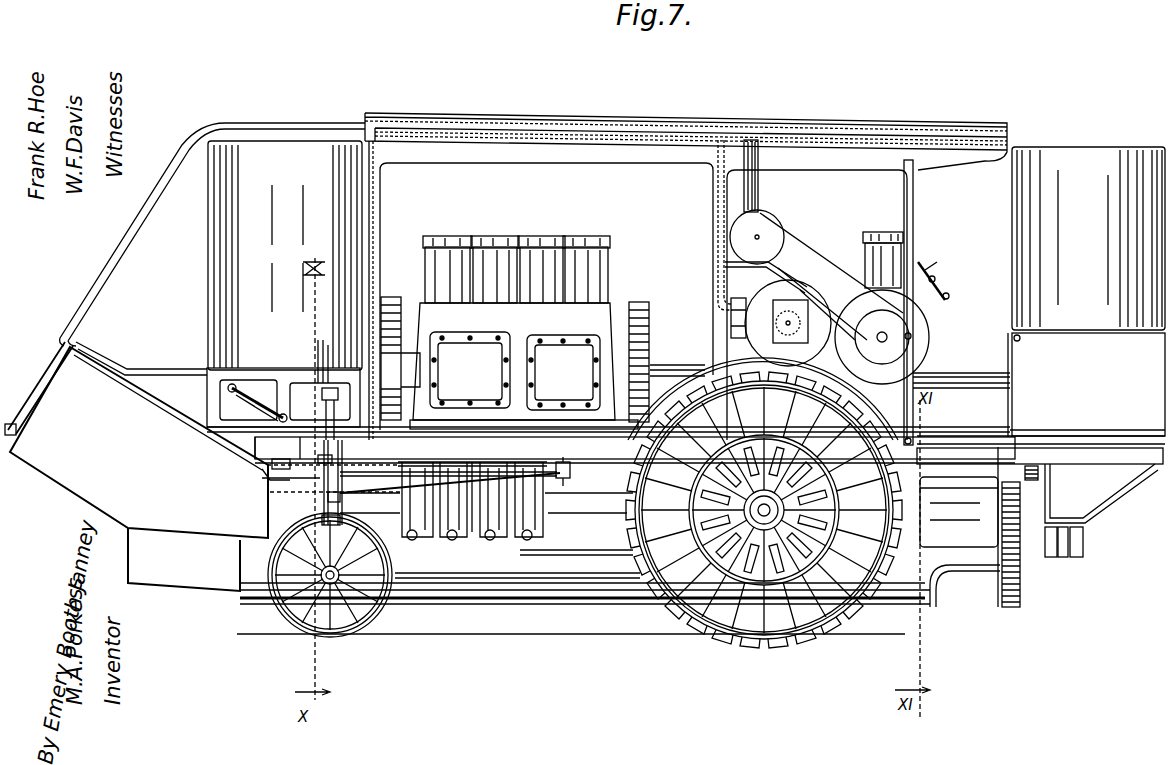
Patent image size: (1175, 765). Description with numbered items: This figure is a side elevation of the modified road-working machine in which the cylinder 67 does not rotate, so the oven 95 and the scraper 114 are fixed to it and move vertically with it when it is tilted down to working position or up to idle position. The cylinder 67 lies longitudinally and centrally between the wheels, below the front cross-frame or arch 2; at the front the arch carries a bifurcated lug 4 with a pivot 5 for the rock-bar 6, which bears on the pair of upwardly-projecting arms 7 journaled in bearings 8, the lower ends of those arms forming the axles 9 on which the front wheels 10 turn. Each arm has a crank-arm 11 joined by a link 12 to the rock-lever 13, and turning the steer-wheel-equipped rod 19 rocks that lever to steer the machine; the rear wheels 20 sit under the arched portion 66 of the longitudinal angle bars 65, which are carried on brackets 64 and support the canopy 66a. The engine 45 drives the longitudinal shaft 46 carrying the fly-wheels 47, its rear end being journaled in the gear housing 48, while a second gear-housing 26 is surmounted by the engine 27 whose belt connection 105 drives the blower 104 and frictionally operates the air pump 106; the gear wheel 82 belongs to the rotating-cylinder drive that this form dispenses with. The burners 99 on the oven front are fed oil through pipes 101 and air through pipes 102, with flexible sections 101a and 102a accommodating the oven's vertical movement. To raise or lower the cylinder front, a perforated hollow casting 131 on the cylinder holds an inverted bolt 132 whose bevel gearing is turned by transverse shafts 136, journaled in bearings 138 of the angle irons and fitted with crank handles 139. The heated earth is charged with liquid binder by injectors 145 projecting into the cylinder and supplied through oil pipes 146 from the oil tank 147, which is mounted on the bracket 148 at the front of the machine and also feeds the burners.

The canopy 66a is at (686, 132).
The flexible section 102a is at (126, 232).
The pipe 102 is at (64, 334).
The pipe 101 is at (50, 361).
The burner 99 is at (15, 433).
The flexible section 101a is at (157, 369).
The oven 95 is at (98, 494).
The scraper 114 is at (192, 597).
The oil tank 147 is at (285, 255).
The bracket 148 is at (210, 385).
The crank handle 139 is at (232, 392).
The transverse shaft 136 is at (275, 414).
The pivot 5 is at (320, 401).
The upwardly-projecting arm 7 is at (322, 412).
The rock-bar 6 is at (320, 345).
The bifurcated lug 4 is at (326, 388).
The bracket 64 is at (258, 446).
The bearing 138 is at (277, 448).
The inverted bolt 132 is at (275, 464).
The perforated hollow casting 131 is at (282, 478).
The cross-frame 2 is at (322, 458).
The crank-arm 11 is at (332, 500).
The bearing 8 is at (322, 487).
The axle 9 is at (318, 637).
The front wheel 10 is at (352, 640).
The arched portion 66 is at (702, 370).
The engine shaft 46 is at (668, 373).
The engine 45 is at (524, 332).
The fly-wheel 47 is at (393, 297).
The blower 104 is at (757, 216).
The belt connection 105 is at (800, 257).
The air pump 106 is at (815, 300).
The gear-housing 26 is at (882, 342).
The engine 27 is at (878, 233).
The steer-wheel-equipped rod 19 is at (940, 300).
The gear housing 48 is at (1086, 292).
The longitudinal angle bar 65 is at (1050, 437).
The gear wheel 82 is at (1012, 609).
The cylinder 67 is at (600, 604).
The oil pipe 146 is at (440, 503).
The injector 145 is at (414, 541).
The link 12 is at (472, 534).
The rock-lever 13 is at (565, 481).
The rear wheel 20 is at (855, 612).